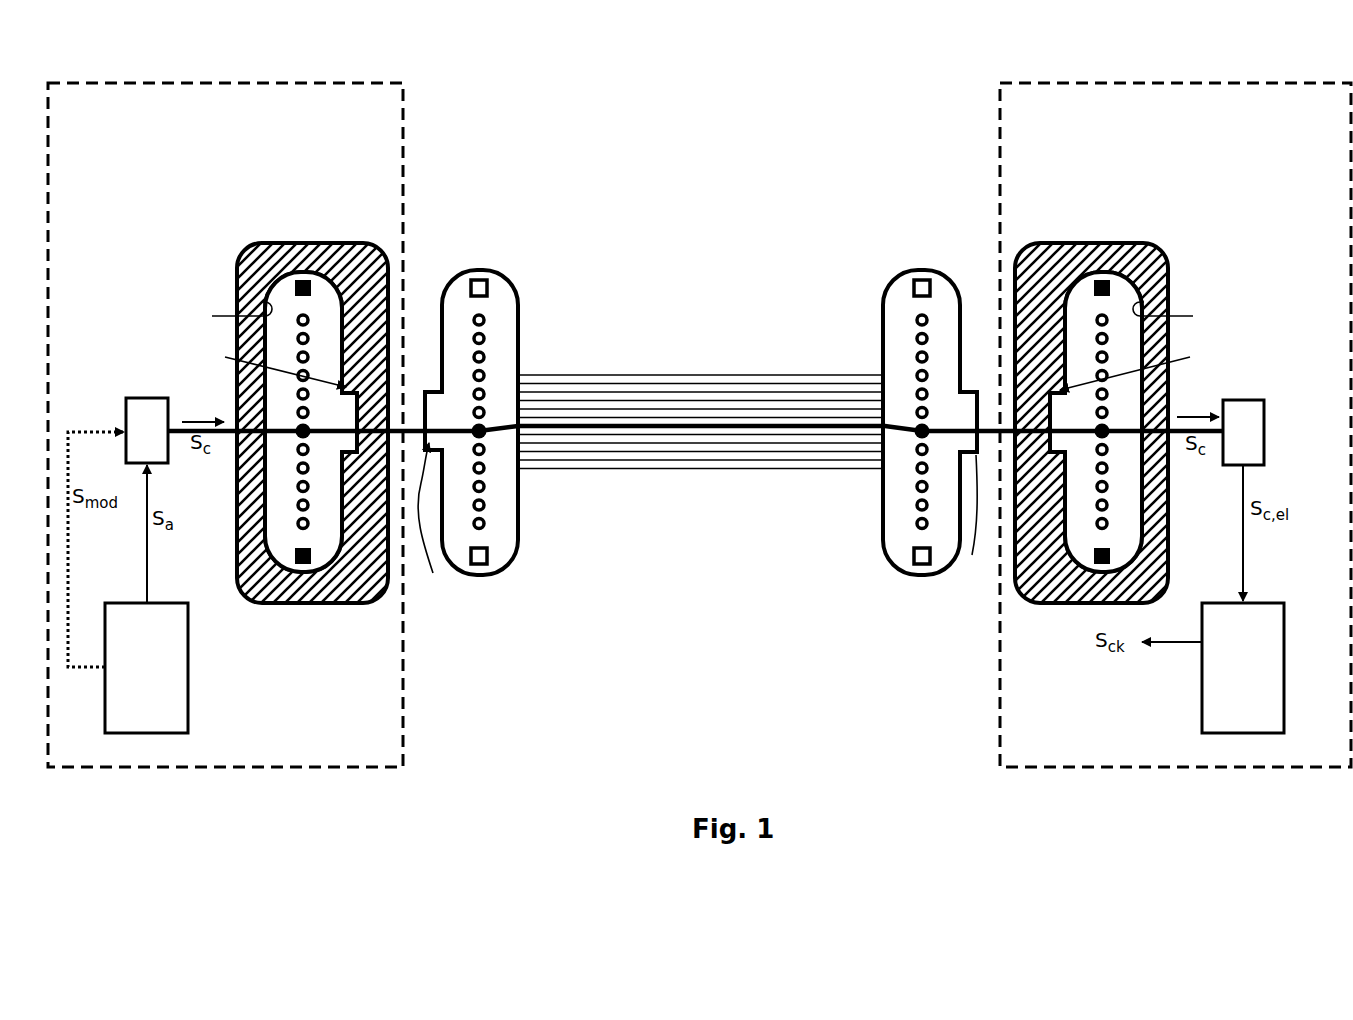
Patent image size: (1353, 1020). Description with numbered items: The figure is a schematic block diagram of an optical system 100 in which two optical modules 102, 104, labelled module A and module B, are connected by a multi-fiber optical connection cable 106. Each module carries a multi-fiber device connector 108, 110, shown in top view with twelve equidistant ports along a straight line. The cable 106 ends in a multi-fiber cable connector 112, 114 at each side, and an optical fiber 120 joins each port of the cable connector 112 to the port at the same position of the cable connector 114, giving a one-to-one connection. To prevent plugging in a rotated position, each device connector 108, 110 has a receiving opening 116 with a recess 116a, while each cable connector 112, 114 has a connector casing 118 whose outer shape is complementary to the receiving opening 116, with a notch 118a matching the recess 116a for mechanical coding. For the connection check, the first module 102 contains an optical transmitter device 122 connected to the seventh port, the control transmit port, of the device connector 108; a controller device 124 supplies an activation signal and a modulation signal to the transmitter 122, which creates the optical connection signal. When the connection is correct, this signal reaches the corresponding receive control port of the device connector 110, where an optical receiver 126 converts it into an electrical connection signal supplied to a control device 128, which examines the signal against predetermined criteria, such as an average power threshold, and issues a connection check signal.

The optical system 100 is at (721, 166).
The optical module 102 is at (229, 105).
The optical module 104 is at (1162, 105).
The multi-fiber optical connection cable 106 is at (663, 338).
The multi-fiber device connector 108 is at (298, 214).
The multi-fiber device connector 110 is at (1093, 214).
The multi-fiber cable connector 112 is at (519, 258).
The multi-fiber cable connector 114 is at (890, 258).
The receiving opening 116 is at (699, 315).
The recess 116a is at (707, 364).
The connector casing 118 is at (485, 245).
The notch 118a is at (706, 524).
The optical fiber 120 is at (631, 428).
The optical transmitter device 122 is at (144, 379).
The controller device 124 is at (175, 641).
The optical receiver 126 is at (1258, 405).
The control device 128 is at (1277, 640).